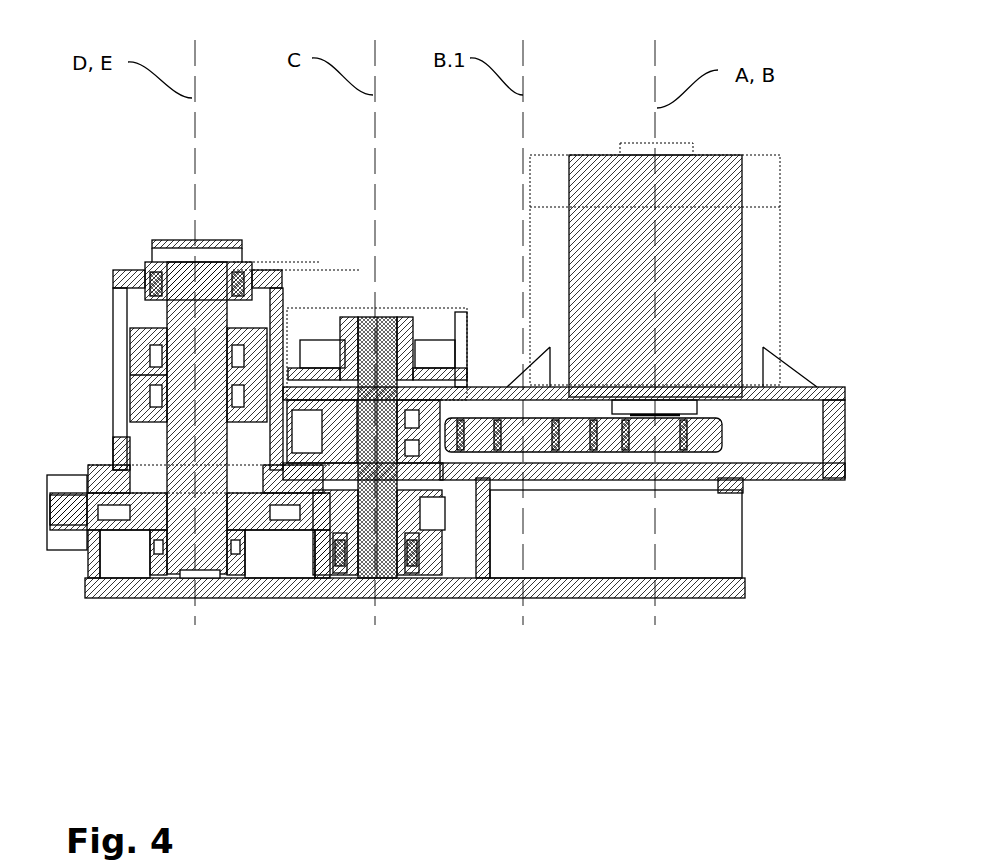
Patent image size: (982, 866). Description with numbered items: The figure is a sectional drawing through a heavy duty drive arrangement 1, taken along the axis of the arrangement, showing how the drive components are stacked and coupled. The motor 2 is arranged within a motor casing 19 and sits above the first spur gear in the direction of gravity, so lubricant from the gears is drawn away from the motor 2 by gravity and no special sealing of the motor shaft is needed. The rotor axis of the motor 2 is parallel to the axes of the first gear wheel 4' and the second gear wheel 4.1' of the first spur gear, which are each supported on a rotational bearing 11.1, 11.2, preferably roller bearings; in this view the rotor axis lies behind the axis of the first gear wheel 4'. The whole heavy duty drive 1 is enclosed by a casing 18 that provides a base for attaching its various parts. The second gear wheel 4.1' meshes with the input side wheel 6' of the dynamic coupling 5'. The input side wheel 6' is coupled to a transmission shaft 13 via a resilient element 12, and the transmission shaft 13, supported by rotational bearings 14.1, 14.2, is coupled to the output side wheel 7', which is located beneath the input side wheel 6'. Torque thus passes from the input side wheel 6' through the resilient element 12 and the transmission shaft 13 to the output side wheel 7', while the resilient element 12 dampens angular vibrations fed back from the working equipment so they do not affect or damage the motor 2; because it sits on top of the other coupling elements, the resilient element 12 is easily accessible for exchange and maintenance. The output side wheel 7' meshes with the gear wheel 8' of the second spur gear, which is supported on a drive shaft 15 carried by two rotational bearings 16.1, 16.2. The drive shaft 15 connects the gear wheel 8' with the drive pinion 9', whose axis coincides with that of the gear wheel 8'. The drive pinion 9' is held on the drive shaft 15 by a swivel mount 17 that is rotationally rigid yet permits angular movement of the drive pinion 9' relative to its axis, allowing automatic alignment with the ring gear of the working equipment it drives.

The heavy duty drive arrangement 1 is at (673, 202).
The motor 2 is at (602, 155).
The first gear wheel 4' is at (564, 536).
The second gear wheel 4.1' is at (583, 551).
The dynamic coupling 5' is at (397, 254).
The input side wheel 6' is at (451, 542).
The output side wheel 7' is at (361, 542).
The gear wheel of the second spur gear 8' is at (188, 575).
The drive pinion 9' is at (148, 363).
The rotational bearing 11.1 is at (685, 448).
The rotational bearing 11.2 is at (555, 452).
The resilient element 12 is at (325, 357).
The transmission shaft 13 is at (408, 500).
The rotational bearing 14.1 is at (345, 547).
The rotational bearing 14.2 is at (415, 518).
The drive shaft 15 is at (205, 555).
The rotational bearing 16.1 is at (160, 570).
The rotational bearing 16.2 is at (157, 277).
The swivel mount 17 is at (167, 390).
The casing 18 is at (537, 588).
The motor casing 19 is at (760, 272).